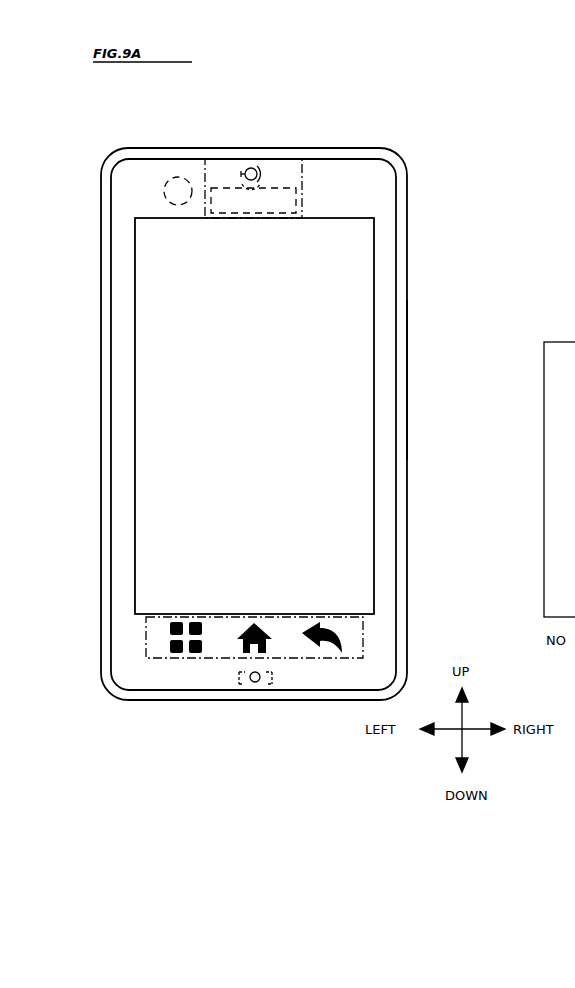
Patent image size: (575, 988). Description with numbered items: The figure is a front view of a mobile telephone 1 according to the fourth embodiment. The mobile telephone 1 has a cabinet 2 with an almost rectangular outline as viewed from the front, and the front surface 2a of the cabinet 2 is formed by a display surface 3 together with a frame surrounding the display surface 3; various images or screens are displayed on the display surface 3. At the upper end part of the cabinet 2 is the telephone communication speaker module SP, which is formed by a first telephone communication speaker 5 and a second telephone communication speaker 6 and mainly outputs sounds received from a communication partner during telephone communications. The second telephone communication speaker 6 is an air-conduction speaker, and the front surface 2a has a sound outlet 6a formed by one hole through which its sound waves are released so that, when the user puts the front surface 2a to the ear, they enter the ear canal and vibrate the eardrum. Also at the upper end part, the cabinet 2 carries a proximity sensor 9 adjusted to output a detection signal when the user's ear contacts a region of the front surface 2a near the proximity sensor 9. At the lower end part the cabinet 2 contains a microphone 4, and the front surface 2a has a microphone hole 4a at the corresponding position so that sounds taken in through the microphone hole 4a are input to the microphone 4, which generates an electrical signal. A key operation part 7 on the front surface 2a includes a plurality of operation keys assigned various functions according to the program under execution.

The mobile telephone 1 is at (409, 155).
The cabinet 2 is at (407, 247).
The front surface 2a is at (383, 380).
The display surface 3 is at (154, 283).
The microphone 4 is at (241, 692).
The microphone hole 4a is at (258, 690).
The first telephone communication speaker 5 is at (278, 188).
The second telephone communication speaker 6 is at (251, 165).
The sound outlet 6a is at (245, 175).
The key operation part 7 is at (317, 660).
The proximity sensor 9 is at (163, 188).
The telephone communication speaker module SP is at (302, 175).